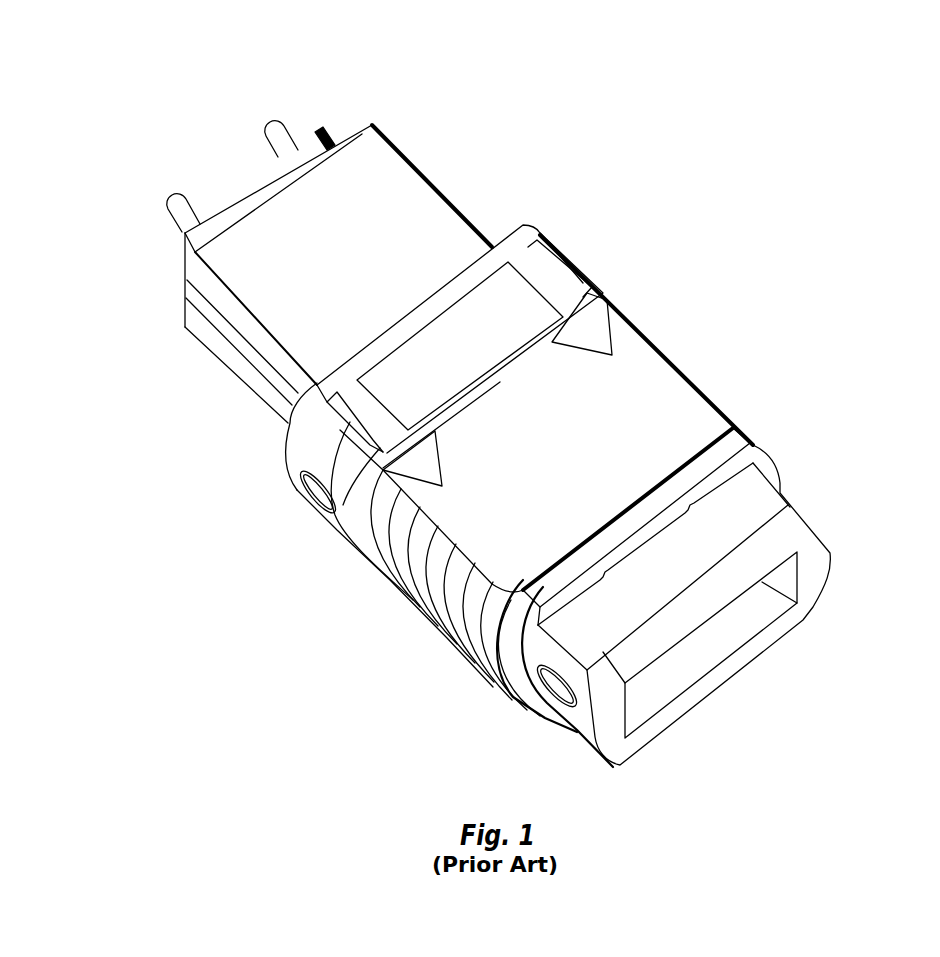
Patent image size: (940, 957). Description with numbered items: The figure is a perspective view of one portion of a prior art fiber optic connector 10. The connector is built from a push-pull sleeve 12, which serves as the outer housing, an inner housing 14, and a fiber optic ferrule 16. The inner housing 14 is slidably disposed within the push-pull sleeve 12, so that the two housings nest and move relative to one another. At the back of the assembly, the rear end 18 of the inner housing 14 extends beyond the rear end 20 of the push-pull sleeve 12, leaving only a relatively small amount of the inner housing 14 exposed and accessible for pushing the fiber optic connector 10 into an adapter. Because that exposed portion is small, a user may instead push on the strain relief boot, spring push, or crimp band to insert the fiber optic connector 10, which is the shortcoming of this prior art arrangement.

The fiber optic connector 10 is at (539, 406).
The push-pull sleeve 12 is at (662, 347).
The inner housing 14 is at (440, 185).
The fiber optic ferrule 16 is at (330, 131).
The rear end 18 is at (830, 568).
The rear end 20 is at (493, 687).